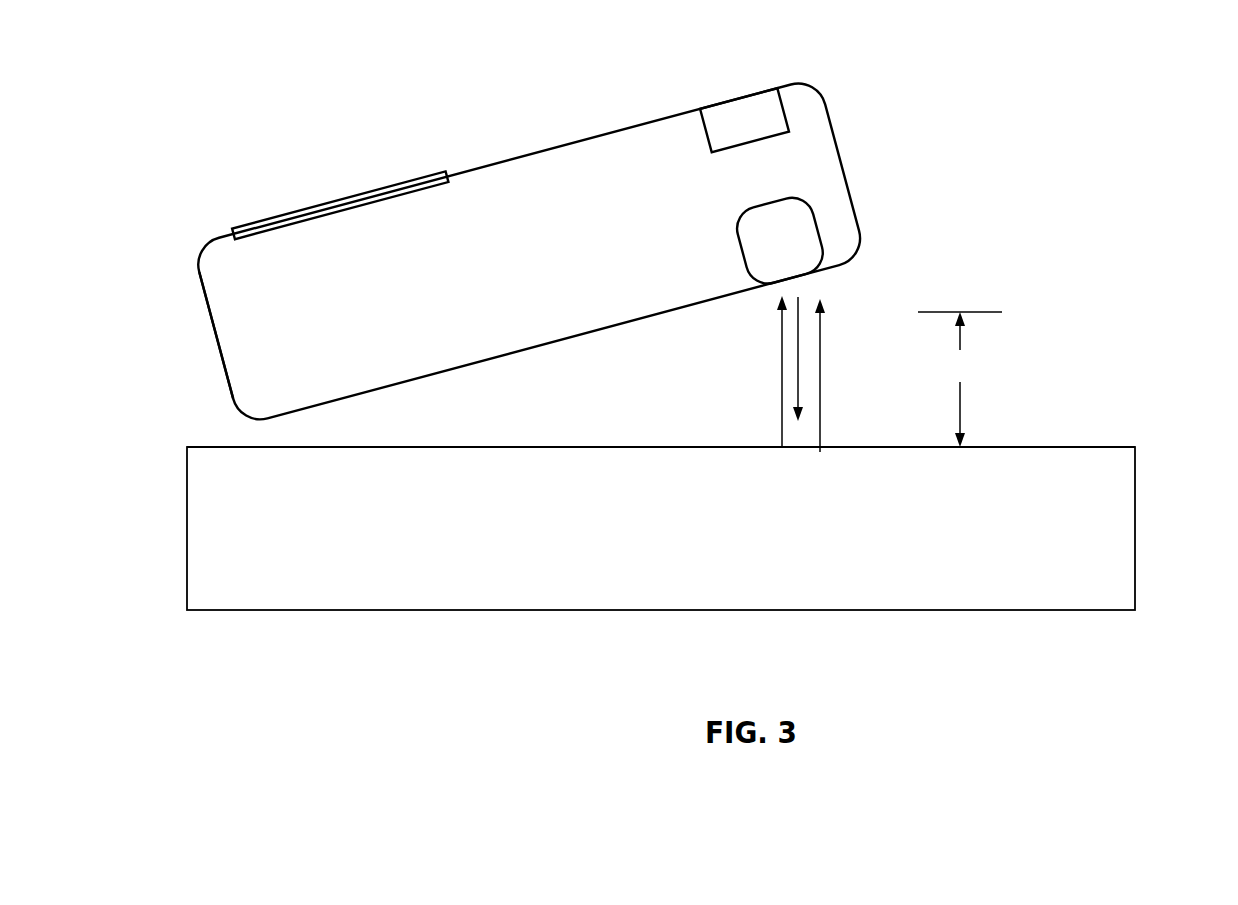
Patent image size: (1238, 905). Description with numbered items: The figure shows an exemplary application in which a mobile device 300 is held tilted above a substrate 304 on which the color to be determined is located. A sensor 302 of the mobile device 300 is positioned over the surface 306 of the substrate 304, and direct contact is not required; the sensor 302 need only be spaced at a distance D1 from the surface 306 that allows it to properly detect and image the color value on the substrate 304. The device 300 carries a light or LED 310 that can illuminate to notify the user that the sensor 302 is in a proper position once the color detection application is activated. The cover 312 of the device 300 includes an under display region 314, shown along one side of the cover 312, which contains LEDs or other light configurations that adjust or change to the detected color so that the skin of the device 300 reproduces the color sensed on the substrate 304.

The mobile device 300 is at (259, 225).
The sensor 302 is at (800, 280).
The substrate 304 is at (1090, 531).
The surface 306 is at (1052, 447).
The LED 310 is at (738, 97).
The cover 312 is at (217, 337).
The under display region 314 is at (364, 197).
The distance D1 is at (960, 379).